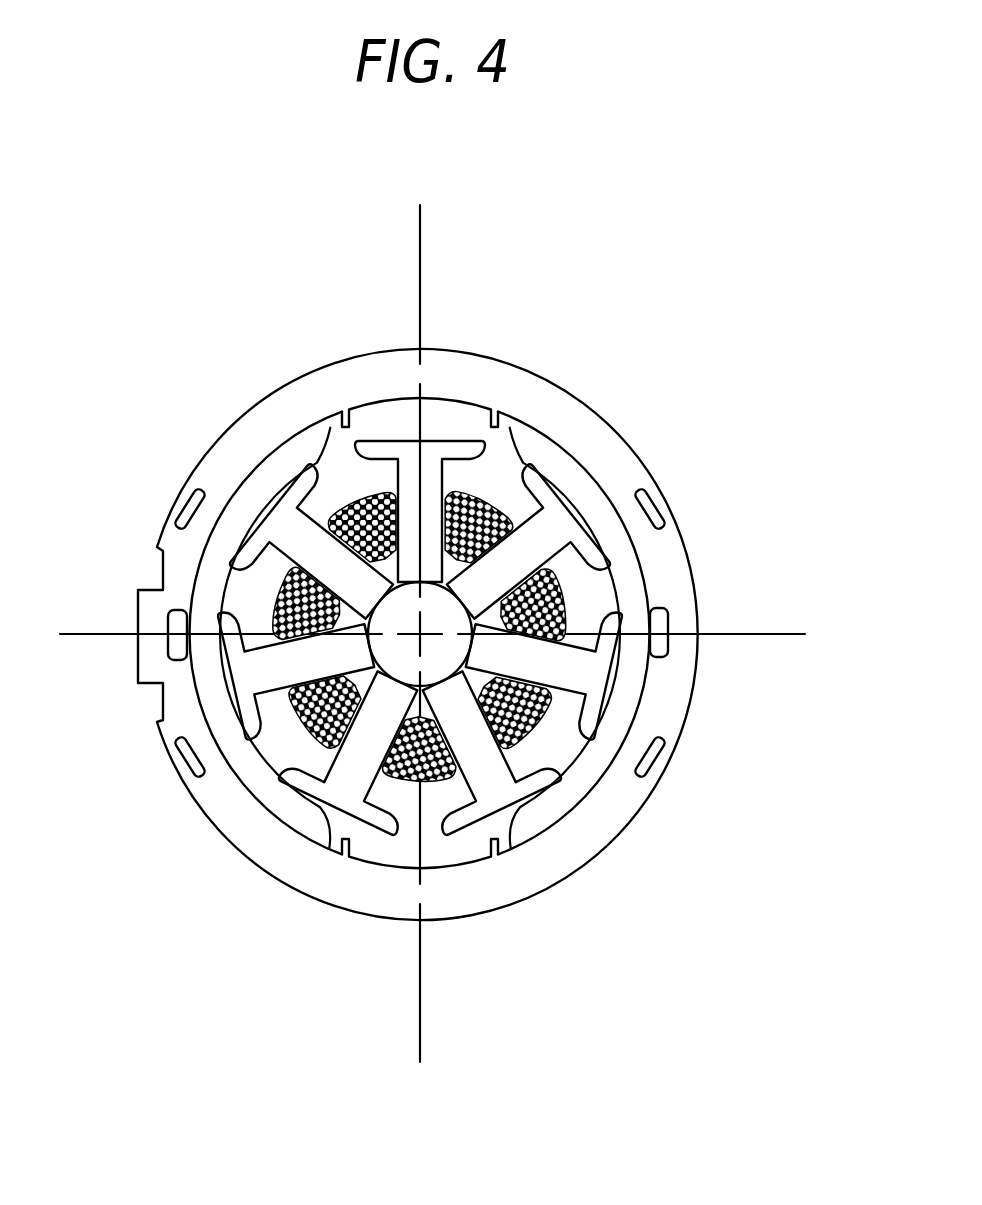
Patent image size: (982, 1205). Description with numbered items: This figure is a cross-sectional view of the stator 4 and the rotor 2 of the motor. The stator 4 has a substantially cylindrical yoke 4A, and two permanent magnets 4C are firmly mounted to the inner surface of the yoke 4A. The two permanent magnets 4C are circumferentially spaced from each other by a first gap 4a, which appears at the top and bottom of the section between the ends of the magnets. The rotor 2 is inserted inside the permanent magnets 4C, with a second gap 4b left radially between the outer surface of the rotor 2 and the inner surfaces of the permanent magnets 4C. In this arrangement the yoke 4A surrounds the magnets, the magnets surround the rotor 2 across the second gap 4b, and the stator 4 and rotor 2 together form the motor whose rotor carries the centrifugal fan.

The stator 4 is at (668, 311).
The rotor 2 is at (433, 455).
The first gap 4a is at (405, 405).
The second gap 4b is at (282, 487).
The yoke 4A is at (668, 560).
The permanent magnets 4C is at (258, 788).